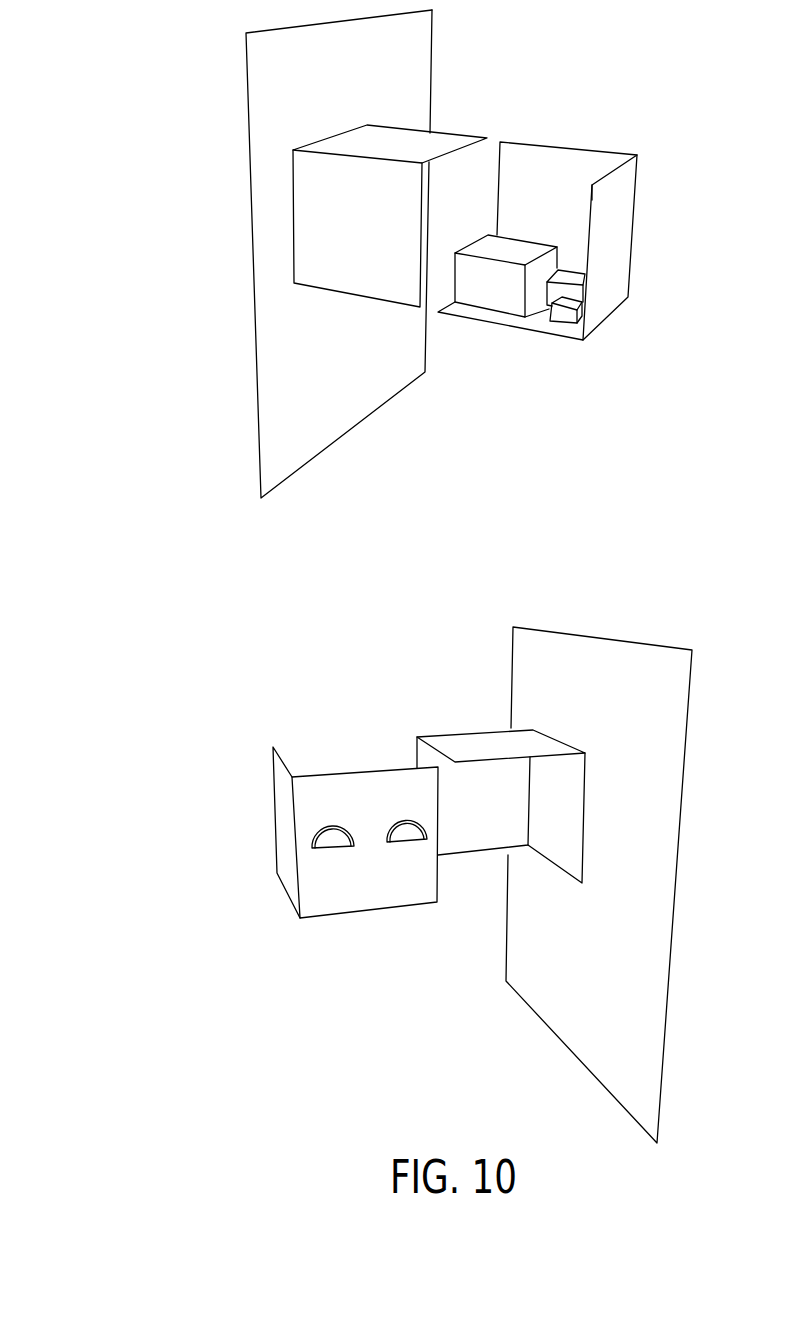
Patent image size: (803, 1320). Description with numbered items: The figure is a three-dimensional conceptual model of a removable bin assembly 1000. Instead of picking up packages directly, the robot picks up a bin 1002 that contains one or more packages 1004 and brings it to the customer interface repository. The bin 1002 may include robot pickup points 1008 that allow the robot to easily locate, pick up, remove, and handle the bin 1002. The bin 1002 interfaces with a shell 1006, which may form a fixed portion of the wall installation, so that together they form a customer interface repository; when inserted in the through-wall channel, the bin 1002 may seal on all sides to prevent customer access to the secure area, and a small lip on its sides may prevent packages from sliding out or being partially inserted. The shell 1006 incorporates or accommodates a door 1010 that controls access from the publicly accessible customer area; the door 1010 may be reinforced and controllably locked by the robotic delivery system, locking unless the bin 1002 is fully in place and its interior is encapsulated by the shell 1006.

The removable bin assembly 1000 is at (152, 498).
The bin 1002 is at (620, 177).
The packages 1004 is at (520, 247).
The shell 1006 is at (438, 143).
The robot pickup points 1008 is at (338, 830).
The door 1010 is at (545, 833).